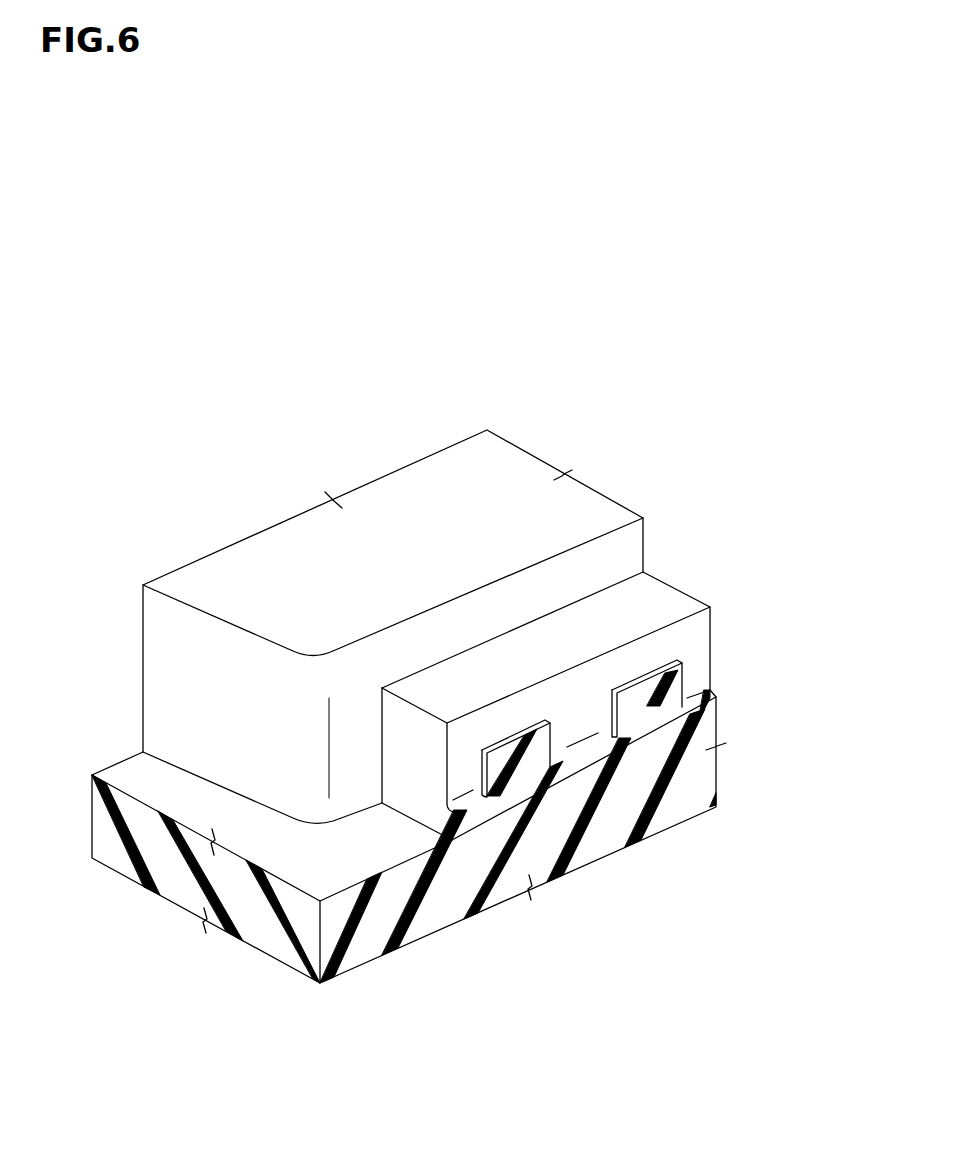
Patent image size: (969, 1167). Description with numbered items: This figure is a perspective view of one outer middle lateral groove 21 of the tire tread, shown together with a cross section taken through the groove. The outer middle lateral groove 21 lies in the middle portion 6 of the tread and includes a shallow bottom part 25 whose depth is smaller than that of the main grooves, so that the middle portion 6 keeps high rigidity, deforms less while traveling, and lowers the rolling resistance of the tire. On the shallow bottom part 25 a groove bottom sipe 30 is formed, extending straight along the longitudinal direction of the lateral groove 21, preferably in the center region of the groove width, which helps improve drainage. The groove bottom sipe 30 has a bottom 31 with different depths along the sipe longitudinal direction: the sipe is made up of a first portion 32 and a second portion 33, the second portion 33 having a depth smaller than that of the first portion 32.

The middle portion 6 is at (445, 520).
The outer middle lateral groove 21 is at (448, 690).
The shallow bottom part 25 is at (648, 607).
The groove bottom sipe 30 is at (822, 558).
The bottom 31 is at (472, 802).
The first portion 32 is at (592, 712).
The second portion 33 is at (653, 657).